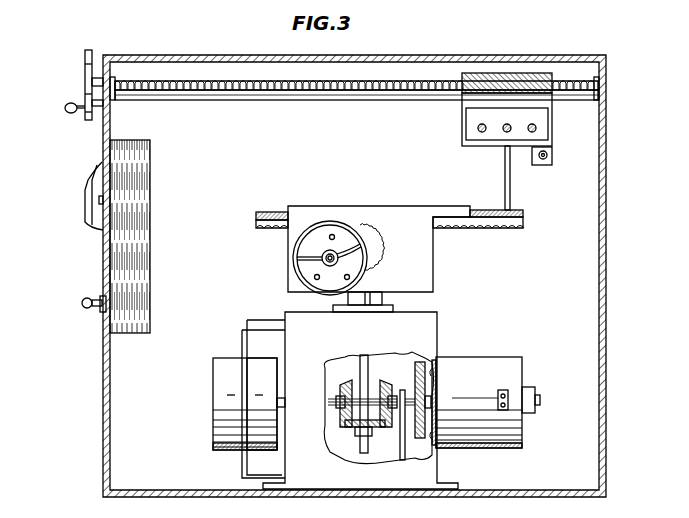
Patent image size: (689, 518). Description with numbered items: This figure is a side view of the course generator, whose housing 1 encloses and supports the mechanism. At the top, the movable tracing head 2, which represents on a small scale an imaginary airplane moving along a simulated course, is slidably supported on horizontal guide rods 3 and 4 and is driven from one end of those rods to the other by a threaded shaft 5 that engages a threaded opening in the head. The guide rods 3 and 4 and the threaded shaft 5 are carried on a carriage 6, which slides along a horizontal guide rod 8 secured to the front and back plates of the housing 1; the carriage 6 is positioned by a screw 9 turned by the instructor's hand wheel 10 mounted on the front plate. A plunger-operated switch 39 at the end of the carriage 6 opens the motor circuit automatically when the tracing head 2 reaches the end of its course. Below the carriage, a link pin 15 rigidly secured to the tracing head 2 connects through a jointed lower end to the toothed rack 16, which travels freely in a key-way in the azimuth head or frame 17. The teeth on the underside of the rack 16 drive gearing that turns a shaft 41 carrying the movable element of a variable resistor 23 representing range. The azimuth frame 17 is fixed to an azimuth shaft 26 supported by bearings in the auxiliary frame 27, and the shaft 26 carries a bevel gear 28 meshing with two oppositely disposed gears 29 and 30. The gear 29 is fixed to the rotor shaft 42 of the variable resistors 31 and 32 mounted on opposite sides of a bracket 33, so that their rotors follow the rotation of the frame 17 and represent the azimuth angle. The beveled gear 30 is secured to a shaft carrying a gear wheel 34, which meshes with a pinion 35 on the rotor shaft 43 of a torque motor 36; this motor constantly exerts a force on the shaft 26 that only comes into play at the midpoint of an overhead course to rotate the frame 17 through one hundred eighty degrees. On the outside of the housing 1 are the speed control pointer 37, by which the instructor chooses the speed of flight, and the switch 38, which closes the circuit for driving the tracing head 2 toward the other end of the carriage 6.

The housing 1 is at (103, 415).
The tracing head 2 is at (480, 147).
The guide rod 3 is at (478, 128).
The guide rod 4 is at (537, 128).
The threaded shaft 5 is at (509, 124).
The carriage 6 is at (462, 76).
The guide rod 8 is at (316, 98).
The screw 9 is at (190, 90).
The hand wheel 10 is at (85, 52).
The link pin 15 is at (505, 185).
The rack 16 is at (523, 219).
The azimuth head or frame 17 is at (433, 258).
The variable resistor 23 is at (323, 228).
The azimuth shaft 26 is at (362, 362).
The auxiliary frame 27 is at (437, 312).
The bevel gear 28 is at (374, 430).
The gear 29 is at (346, 392).
The beveled gear 30 is at (386, 394).
The variable resistor 31 is at (213, 410).
The variable resistor 32 is at (270, 358).
The bracket 33 is at (256, 330).
The gear wheel 34 is at (420, 364).
The pinion 35 is at (402, 390).
The torque motor 36 is at (506, 357).
The speed control pointer 37 is at (85, 200).
The switch 38 is at (82, 305).
The plunger-operated switch 39 is at (550, 155).
The shaft 41 is at (332, 254).
The rotor shaft 42 is at (283, 408).
The rotor shaft 43 is at (540, 400).